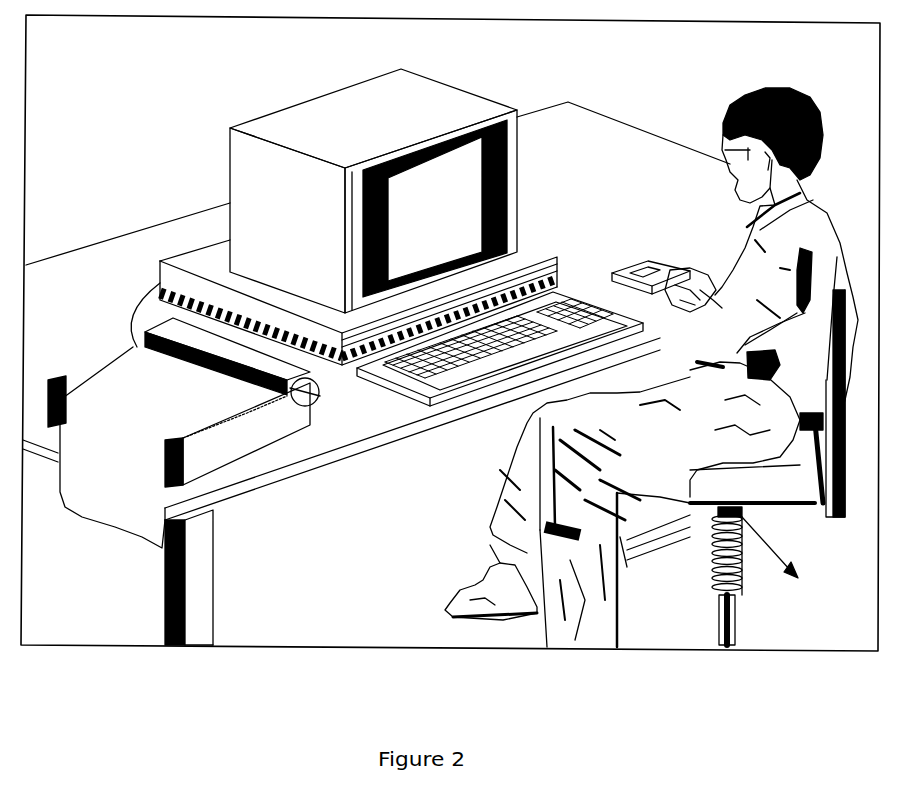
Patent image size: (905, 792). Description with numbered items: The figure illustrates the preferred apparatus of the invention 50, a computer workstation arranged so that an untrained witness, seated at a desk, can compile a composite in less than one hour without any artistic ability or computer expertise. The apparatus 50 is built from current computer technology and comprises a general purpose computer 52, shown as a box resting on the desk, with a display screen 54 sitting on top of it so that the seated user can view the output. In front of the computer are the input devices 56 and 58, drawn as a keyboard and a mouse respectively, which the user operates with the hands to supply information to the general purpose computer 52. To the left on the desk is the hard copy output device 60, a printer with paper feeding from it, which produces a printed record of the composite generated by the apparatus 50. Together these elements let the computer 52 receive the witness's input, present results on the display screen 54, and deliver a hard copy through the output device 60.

The preferred apparatus of the invention 50 is at (376, 340).
The general purpose computer 52 is at (376, 373).
The display screen 54 is at (373, 175).
The input device 56 is at (499, 405).
The input device 58 is at (645, 238).
The hard copy output device 60 is at (216, 424).